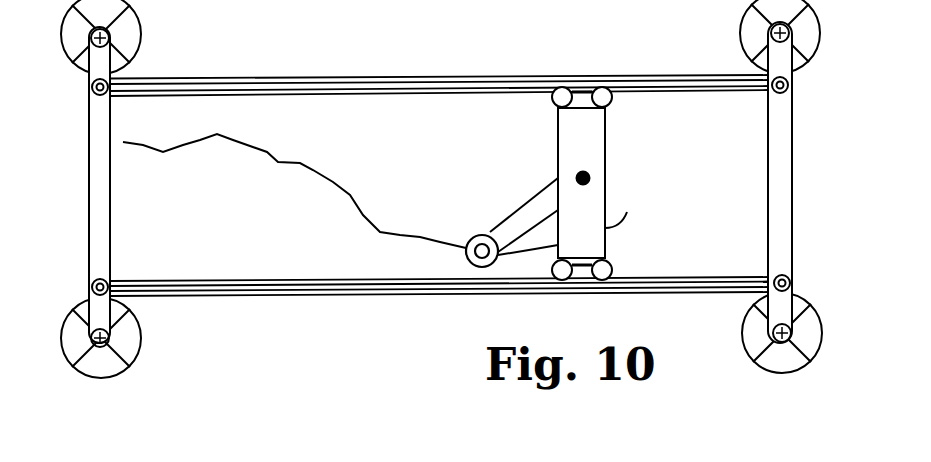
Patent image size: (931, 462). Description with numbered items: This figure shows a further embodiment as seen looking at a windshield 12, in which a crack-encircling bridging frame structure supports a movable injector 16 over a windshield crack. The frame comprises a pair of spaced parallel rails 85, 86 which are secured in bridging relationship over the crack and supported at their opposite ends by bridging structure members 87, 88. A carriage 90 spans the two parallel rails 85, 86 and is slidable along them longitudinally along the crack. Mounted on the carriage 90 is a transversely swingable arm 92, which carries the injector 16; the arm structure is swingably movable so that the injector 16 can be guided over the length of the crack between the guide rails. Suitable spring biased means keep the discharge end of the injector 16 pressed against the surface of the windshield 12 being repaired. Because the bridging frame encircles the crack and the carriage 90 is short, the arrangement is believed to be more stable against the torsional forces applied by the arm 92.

The workpiece contour line 12 is at (349, 200).
The injector 16 is at (473, 242).
The rail 85 is at (470, 86).
The rail 86 is at (463, 288).
The bridging structure member 87 is at (93, 218).
The bridging structure member 88 is at (785, 190).
The carriage 90 is at (585, 140).
The transversely swingable arm 92 is at (525, 213).